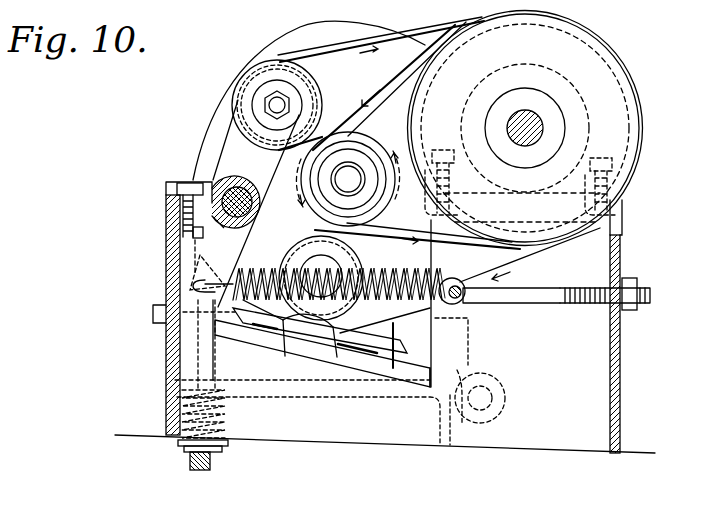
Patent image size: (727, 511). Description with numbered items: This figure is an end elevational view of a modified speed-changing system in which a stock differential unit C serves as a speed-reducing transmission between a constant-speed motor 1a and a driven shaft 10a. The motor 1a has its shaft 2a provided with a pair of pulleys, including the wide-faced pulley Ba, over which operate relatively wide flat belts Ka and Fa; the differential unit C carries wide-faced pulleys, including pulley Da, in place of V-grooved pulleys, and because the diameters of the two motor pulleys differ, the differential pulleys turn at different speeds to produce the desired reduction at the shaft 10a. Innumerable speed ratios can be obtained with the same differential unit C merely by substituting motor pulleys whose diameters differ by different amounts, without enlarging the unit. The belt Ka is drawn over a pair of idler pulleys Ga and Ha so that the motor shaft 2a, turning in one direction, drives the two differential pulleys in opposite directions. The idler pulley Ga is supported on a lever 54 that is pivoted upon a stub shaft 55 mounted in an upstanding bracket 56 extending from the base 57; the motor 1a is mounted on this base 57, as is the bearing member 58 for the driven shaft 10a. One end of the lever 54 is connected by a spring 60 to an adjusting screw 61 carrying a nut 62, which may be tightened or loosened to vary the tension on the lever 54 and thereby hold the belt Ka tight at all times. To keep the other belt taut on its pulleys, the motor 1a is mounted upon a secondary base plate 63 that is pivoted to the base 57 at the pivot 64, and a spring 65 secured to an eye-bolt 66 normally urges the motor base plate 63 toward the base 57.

The motor 1a is at (290, 40).
The belt Ka is at (437, 24).
The belt Fa is at (393, 72).
The idler pulley Ga is at (300, 83).
The pulley Ba is at (370, 150).
The motor shaft 2a is at (352, 172).
The differential unit C is at (626, 54).
The wide-faced pulley Da is at (628, 135).
The bearing member 58 is at (535, 62).
The driven shaft 10a is at (540, 124).
The lever 54 is at (235, 130).
The stub shaft 55 is at (258, 210).
The upstanding bracket 56 is at (166, 337).
The base 57 is at (301, 385).
The spring 60 is at (254, 266).
The idler pulley Ha is at (363, 262).
The adjusting screw 61 is at (544, 303).
The nut 62 is at (636, 280).
The secondary base plate 63 is at (393, 365).
The pivot 64 is at (490, 398).
The spring 65 is at (226, 420).
The eye-bolt 66 is at (188, 463).